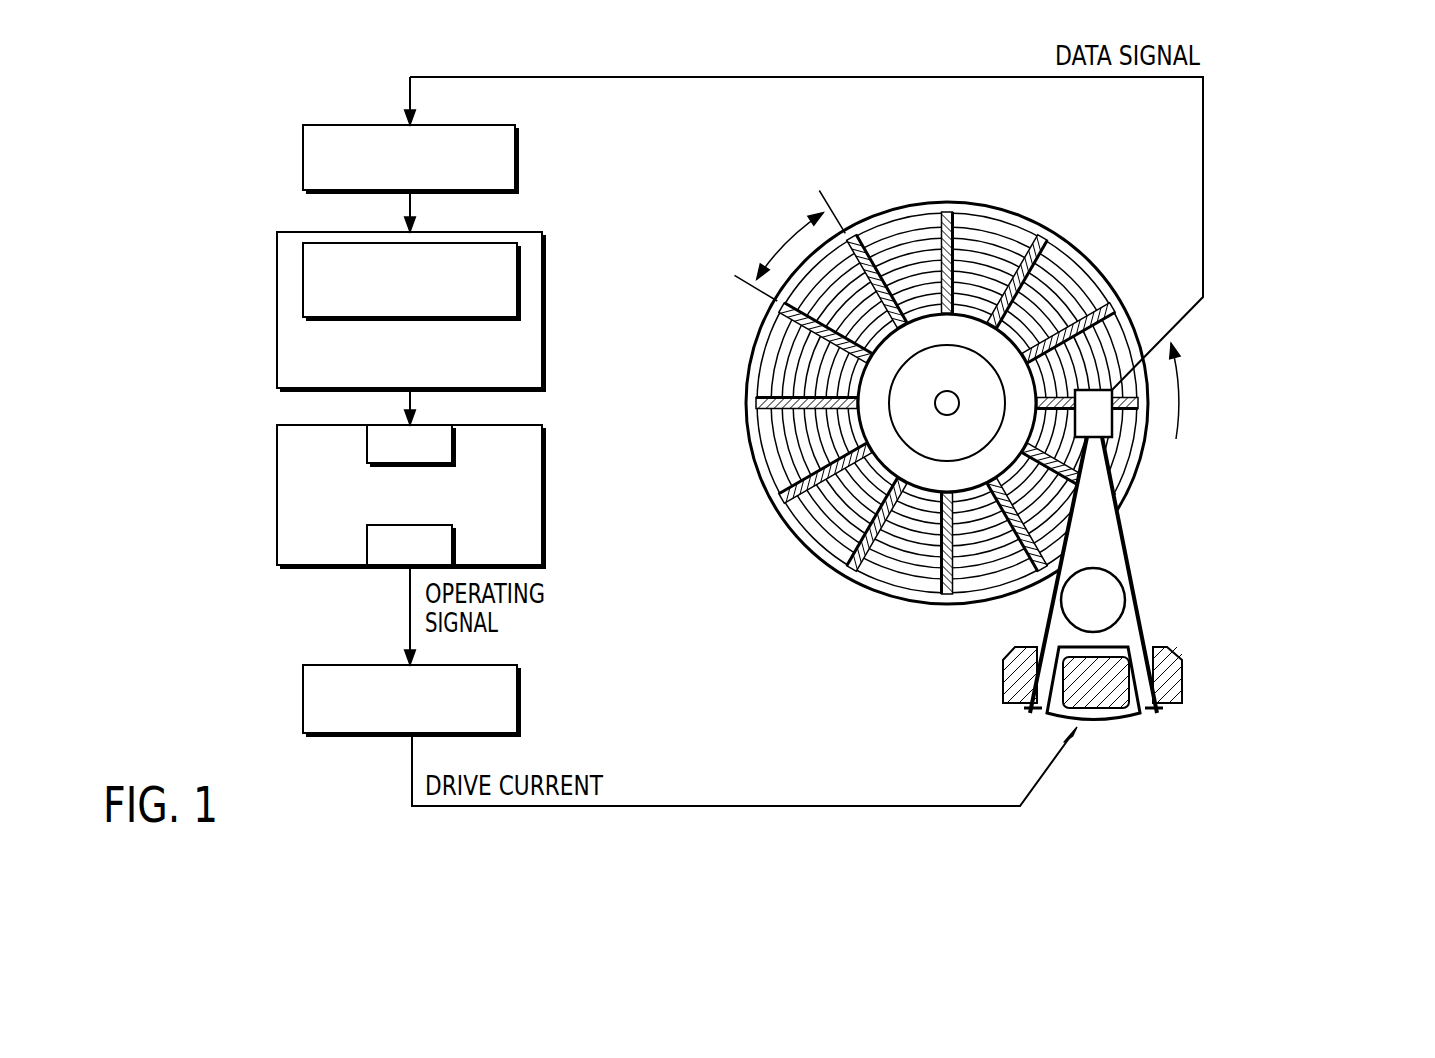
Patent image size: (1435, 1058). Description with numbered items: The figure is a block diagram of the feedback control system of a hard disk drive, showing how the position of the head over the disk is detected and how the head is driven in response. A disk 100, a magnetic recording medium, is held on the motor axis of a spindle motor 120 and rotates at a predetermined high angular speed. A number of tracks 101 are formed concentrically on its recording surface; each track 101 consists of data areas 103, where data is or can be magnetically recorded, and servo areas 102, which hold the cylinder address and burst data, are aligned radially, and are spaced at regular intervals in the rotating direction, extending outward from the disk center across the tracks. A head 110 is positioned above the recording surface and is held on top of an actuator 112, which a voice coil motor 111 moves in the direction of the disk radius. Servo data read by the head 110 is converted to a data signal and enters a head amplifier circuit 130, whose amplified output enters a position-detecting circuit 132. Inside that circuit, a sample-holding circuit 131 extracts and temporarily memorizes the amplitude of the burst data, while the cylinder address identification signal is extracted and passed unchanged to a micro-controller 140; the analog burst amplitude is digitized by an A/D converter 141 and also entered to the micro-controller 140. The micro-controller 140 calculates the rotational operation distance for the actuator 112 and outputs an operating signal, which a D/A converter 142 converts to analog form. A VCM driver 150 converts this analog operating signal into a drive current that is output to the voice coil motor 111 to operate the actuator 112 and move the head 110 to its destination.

The disk 100 is at (1025, 412).
The track 101 is at (947, 465).
The servo area 102 is at (947, 357).
The data area 103 is at (736, 238).
The head 110 is at (1102, 417).
The voice coil motor 111 is at (1182, 668).
The actuator 112 is at (1156, 572).
The spindle motor 120 is at (855, 500).
The head amplifier circuit 130 is at (303, 160).
The sample-holding circuit 131 is at (307, 280).
The position-detecting circuit 132 is at (277, 352).
The micro-controller 140 is at (280, 495).
The A/D converter 141 is at (370, 449).
The D/A converter 142 is at (372, 549).
The VCM driver 150 is at (313, 704).